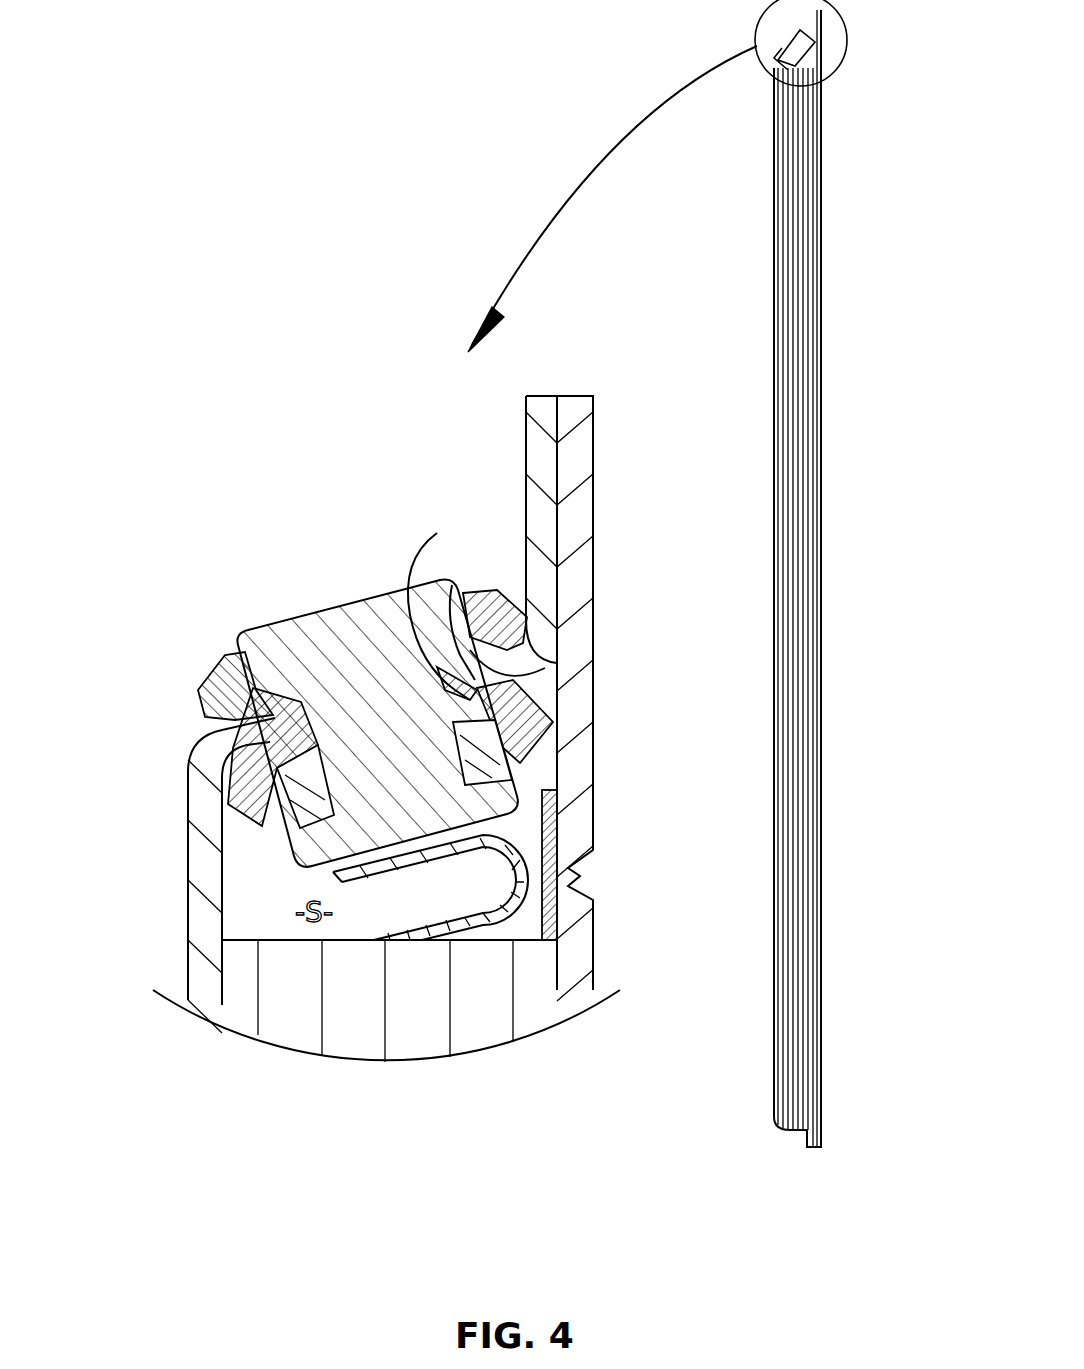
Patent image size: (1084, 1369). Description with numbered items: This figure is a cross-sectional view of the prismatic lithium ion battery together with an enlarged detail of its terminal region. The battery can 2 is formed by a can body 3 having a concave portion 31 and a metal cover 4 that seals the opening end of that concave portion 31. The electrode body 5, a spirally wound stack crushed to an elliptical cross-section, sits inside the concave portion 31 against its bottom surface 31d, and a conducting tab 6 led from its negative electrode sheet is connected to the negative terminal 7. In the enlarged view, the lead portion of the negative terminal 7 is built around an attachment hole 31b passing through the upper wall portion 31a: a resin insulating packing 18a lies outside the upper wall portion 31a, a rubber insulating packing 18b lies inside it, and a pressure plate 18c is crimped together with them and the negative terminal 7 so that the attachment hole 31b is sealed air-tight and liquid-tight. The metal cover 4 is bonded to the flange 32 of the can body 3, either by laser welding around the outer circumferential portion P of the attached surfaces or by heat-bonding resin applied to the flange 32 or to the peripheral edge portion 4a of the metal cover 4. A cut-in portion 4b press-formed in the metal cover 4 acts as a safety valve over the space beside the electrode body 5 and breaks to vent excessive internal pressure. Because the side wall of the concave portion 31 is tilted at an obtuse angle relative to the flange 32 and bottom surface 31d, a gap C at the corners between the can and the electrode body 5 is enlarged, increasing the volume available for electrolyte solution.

The battery can 2 is at (752, 162).
The can body 3 is at (762, 358).
The metal cover 4 is at (600, 645).
The peripheral edge portion 4a is at (560, 520).
The cut-in portion 4b is at (582, 886).
The electrode body 5 is at (405, 1030).
The conducting tab 6 is at (520, 882).
The negative terminal 7 is at (343, 592).
The insulating packing 18a is at (202, 675).
The insulating packing 18b is at (235, 768).
The pressure plate 18c is at (300, 833).
The concave portion 31 is at (238, 908).
The upper wall portion 31a is at (235, 735).
The attachment hole 31b is at (440, 540).
The bottom surface 31d is at (213, 936).
The flange 32 is at (538, 441).
The outer circumferential portion P is at (562, 385).
The gap C is at (802, 1128).